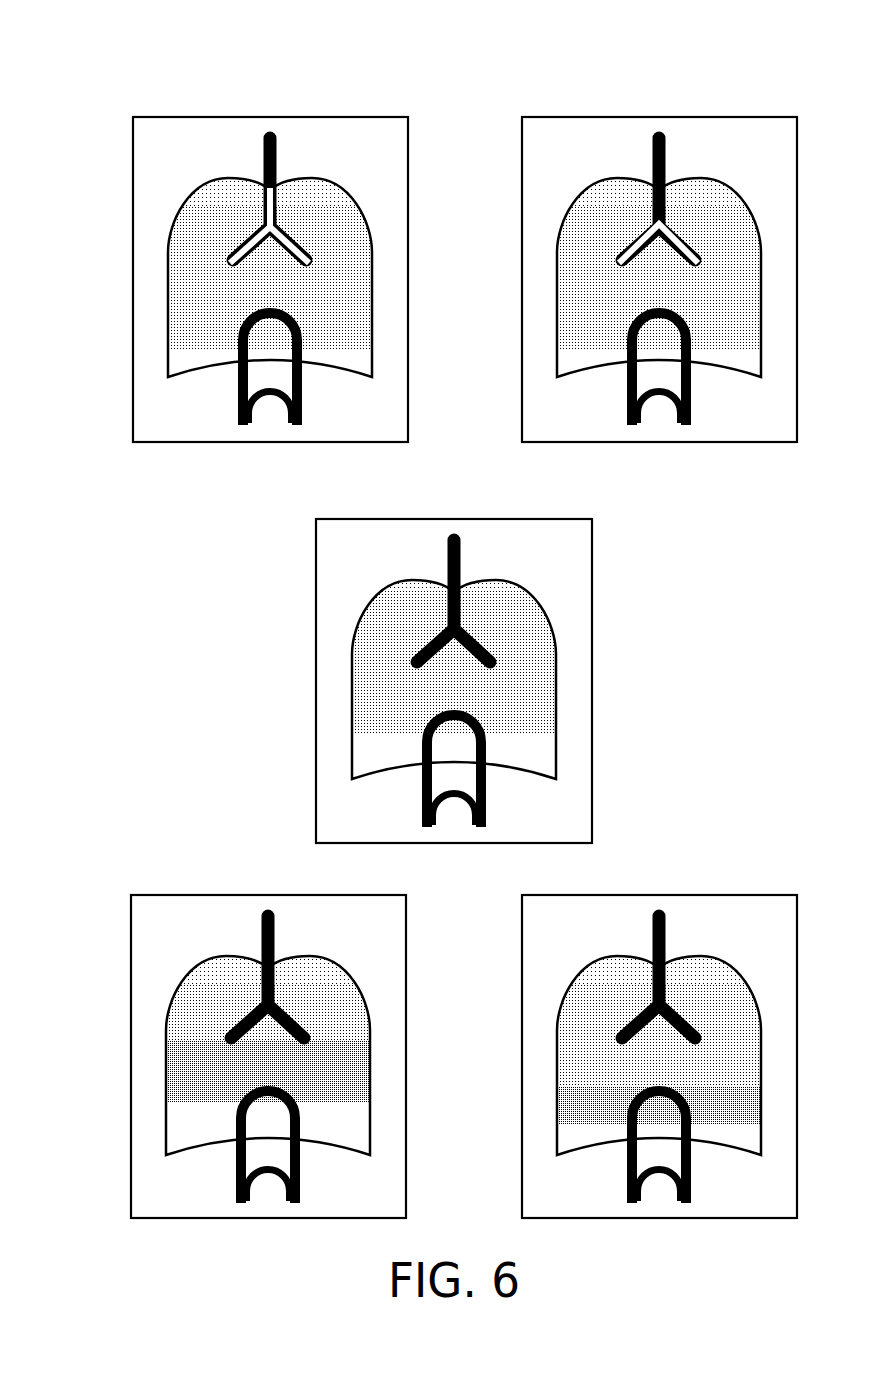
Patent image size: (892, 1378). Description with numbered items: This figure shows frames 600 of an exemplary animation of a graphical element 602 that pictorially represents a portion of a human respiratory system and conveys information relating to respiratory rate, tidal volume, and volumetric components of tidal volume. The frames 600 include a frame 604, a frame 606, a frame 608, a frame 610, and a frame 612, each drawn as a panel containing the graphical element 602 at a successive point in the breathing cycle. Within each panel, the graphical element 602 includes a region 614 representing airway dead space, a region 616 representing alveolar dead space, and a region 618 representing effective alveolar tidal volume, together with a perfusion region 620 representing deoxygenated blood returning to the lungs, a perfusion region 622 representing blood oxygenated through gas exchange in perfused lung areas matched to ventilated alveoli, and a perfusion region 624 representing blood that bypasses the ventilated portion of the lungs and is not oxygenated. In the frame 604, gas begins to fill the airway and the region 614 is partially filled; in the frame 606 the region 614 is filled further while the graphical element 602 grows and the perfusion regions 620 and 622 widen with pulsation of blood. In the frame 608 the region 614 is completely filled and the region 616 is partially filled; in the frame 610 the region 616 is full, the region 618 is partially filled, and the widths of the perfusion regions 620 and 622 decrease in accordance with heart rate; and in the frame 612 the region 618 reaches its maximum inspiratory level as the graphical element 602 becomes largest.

The frames 600 is at (140, 72).
The graphical element 602 is at (214, 277).
The frame 604 is at (270, 251).
The frame 606 is at (659, 251).
The frame 608 is at (454, 651).
The frame 610 is at (268, 1027).
The frame 612 is at (659, 1027).
The region 614 is at (277, 161).
The region 616 is at (325, 189).
The region 618 is at (325, 278).
The perfusion region 620 is at (229, 406).
The perfusion region 622 is at (316, 406).
The perfusion region 624 is at (272, 445).